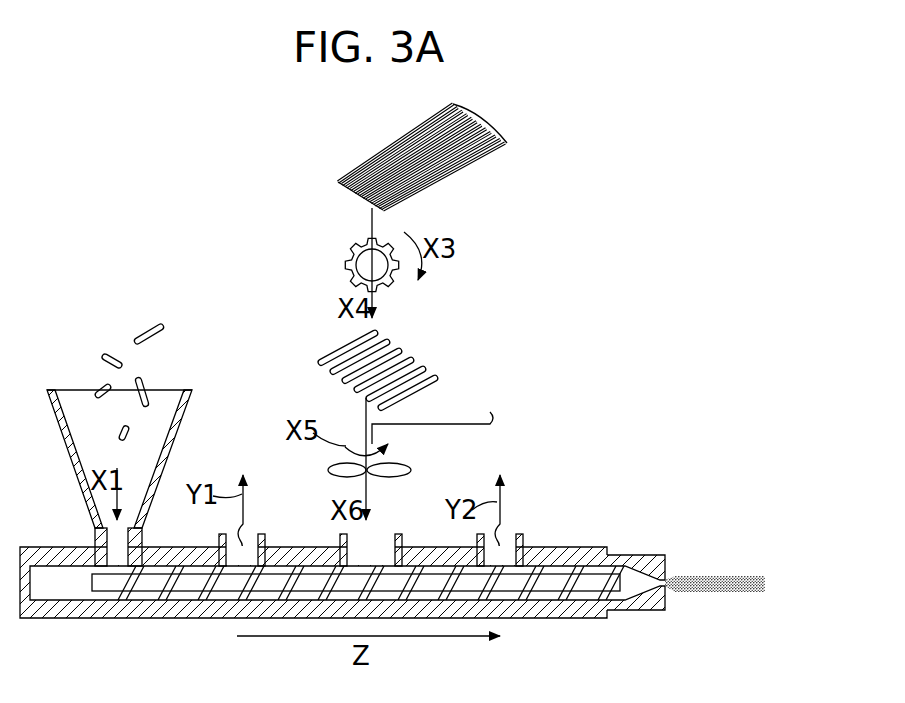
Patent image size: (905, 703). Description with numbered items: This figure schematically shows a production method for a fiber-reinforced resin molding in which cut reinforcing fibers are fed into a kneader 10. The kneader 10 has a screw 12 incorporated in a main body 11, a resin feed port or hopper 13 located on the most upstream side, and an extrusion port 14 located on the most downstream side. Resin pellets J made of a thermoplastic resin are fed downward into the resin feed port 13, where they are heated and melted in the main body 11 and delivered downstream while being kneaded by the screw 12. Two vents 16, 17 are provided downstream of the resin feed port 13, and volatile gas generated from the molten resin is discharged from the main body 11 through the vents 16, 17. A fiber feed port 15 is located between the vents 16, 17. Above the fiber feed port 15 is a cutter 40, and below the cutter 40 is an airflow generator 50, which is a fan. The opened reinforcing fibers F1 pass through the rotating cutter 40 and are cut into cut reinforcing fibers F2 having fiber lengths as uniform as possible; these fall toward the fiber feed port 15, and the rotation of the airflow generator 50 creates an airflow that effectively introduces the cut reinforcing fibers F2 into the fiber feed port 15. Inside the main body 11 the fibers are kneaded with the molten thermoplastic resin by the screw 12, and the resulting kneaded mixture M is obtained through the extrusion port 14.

The kneader 10 is at (612, 367).
The main body 11 is at (60, 610).
The screw 12 is at (195, 605).
The resin feed port (hopper) 13 is at (190, 418).
The extrusion port 14 is at (666, 600).
The fiber feed port 15 is at (392, 536).
The vent 16 is at (256, 534).
The vent 17 is at (507, 548).
The cutter 40 is at (350, 246).
The airflow generator 50 is at (412, 470).
The opened reinforcing fibers F1 is at (400, 143).
The cut reinforcing fibers F2 is at (330, 348).
The resin pellets J is at (140, 330).
The kneaded mixture M is at (740, 575).